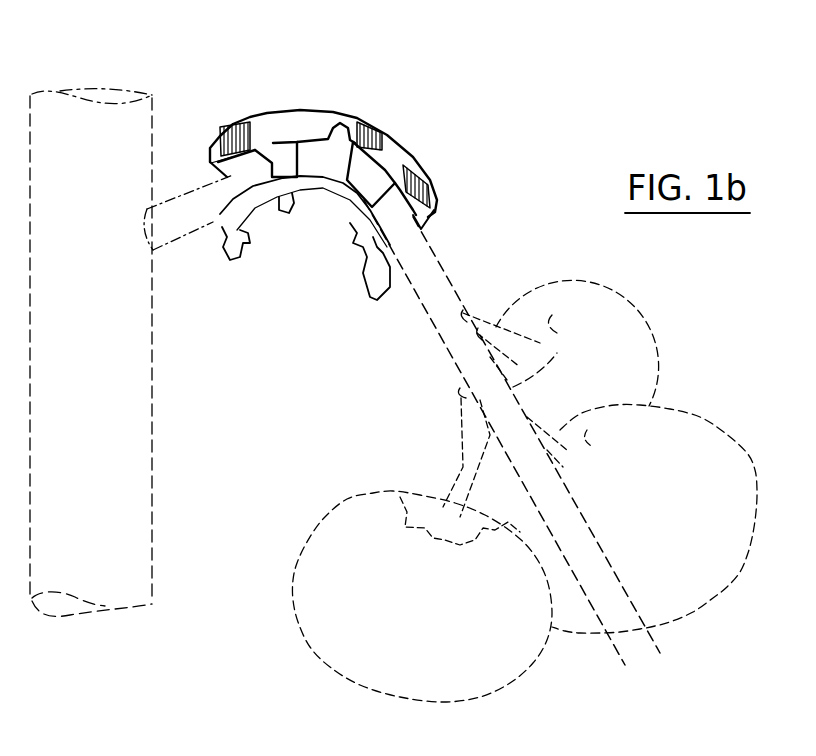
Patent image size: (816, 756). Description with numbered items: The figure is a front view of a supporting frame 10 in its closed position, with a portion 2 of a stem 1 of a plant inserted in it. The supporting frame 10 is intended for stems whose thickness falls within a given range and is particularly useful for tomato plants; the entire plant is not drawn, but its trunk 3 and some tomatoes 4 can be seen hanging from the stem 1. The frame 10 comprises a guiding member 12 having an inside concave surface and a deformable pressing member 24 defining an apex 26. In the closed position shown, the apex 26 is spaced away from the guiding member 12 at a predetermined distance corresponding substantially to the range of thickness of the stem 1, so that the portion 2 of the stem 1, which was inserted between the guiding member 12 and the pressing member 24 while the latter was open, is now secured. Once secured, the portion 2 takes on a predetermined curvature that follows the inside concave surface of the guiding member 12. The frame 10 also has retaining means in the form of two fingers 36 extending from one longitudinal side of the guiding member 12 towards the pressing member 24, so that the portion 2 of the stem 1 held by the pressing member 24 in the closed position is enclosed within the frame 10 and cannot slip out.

The stem 1 is at (520, 405).
The portion of the stem 2 is at (323, 163).
The trunk 3 is at (156, 472).
The tomatoes 4 is at (698, 429).
The supporting frame 10 is at (388, 155).
The guiding member 12 is at (298, 112).
The deformable pressing member 24 is at (290, 203).
The apex 26 is at (323, 180).
The fingers 36 is at (272, 158).